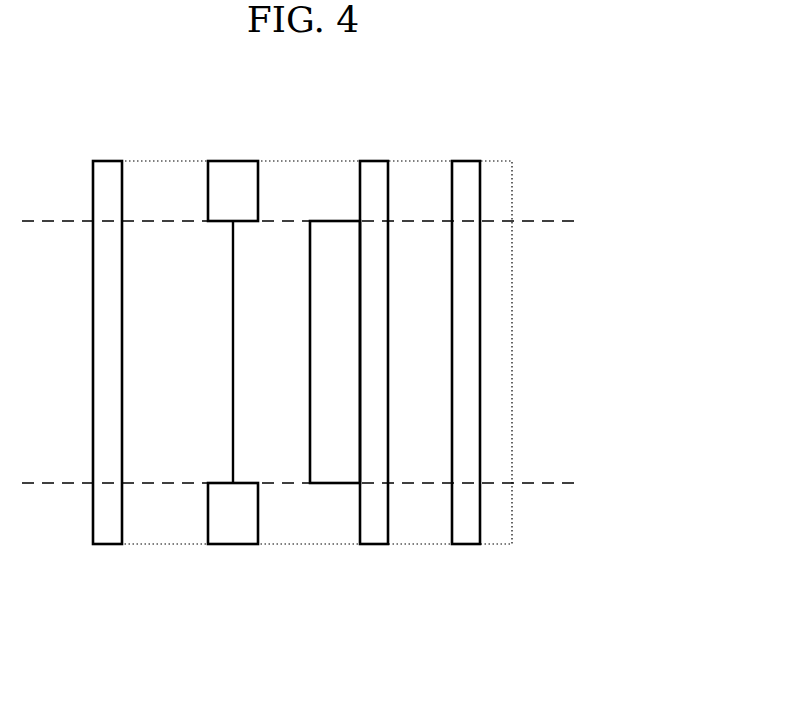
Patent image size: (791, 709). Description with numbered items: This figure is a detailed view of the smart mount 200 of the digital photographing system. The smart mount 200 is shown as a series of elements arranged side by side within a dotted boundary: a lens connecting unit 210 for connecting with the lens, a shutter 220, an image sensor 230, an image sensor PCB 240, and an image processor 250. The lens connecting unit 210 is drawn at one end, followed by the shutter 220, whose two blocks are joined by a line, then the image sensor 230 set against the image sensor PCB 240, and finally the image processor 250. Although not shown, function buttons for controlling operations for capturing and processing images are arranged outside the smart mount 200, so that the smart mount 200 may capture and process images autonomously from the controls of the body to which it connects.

The smart mount 200 is at (548, 83).
The lens connecting unit 210 is at (108, 172).
The shutter 220 is at (230, 177).
The image sensor 230 is at (335, 232).
The image sensor PCB 240 is at (373, 173).
The image processor 250 is at (465, 177).